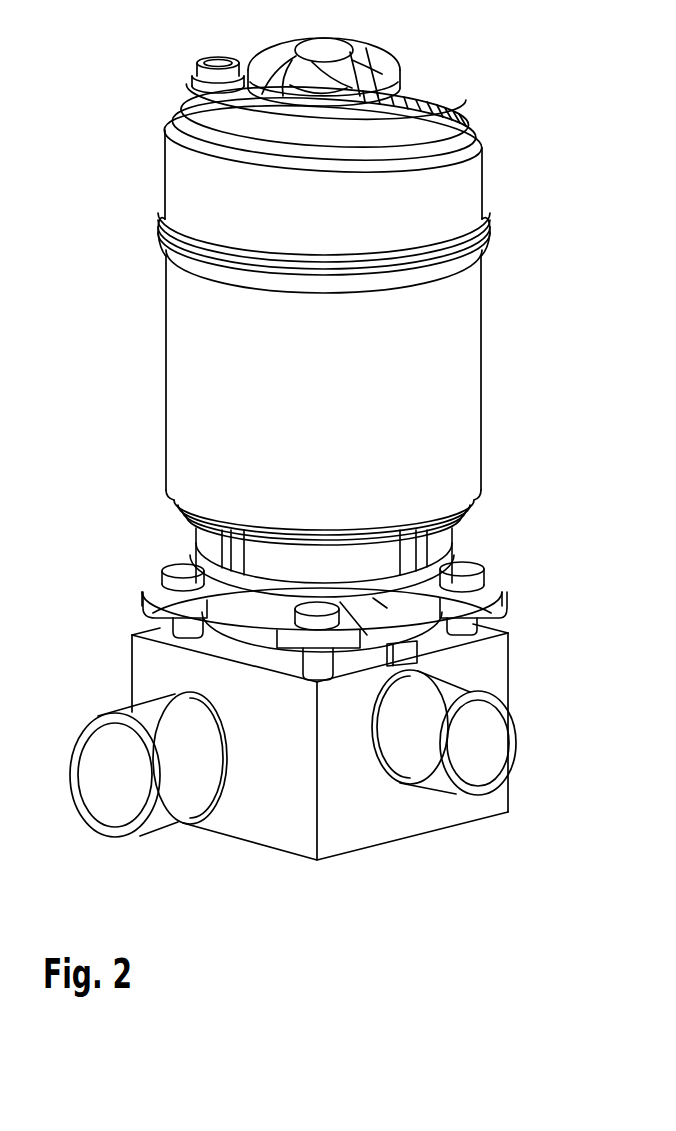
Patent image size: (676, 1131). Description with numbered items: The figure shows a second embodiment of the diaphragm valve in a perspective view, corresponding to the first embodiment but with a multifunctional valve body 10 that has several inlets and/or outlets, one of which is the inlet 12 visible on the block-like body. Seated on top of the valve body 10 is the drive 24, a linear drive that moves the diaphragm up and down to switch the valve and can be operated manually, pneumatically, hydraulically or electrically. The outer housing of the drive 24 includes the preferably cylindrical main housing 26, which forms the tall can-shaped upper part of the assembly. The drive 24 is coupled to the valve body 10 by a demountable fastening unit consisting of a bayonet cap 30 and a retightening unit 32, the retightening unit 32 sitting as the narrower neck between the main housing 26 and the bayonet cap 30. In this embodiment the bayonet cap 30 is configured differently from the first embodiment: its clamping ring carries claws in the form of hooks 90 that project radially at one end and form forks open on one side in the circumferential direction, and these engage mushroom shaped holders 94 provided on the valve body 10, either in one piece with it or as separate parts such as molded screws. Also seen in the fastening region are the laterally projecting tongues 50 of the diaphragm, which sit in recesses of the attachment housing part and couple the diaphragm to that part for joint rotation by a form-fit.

The valve body 10 is at (432, 820).
The inlet 12 is at (490, 733).
The drive 24 is at (372, 291).
The main housing 26 is at (455, 433).
The bayonet cap 30 is at (369, 620).
The retightening unit 32 is at (443, 547).
The tongues 50 is at (405, 654).
The hooks 90 is at (492, 595).
The mushroom shaped holders 94 is at (468, 627).